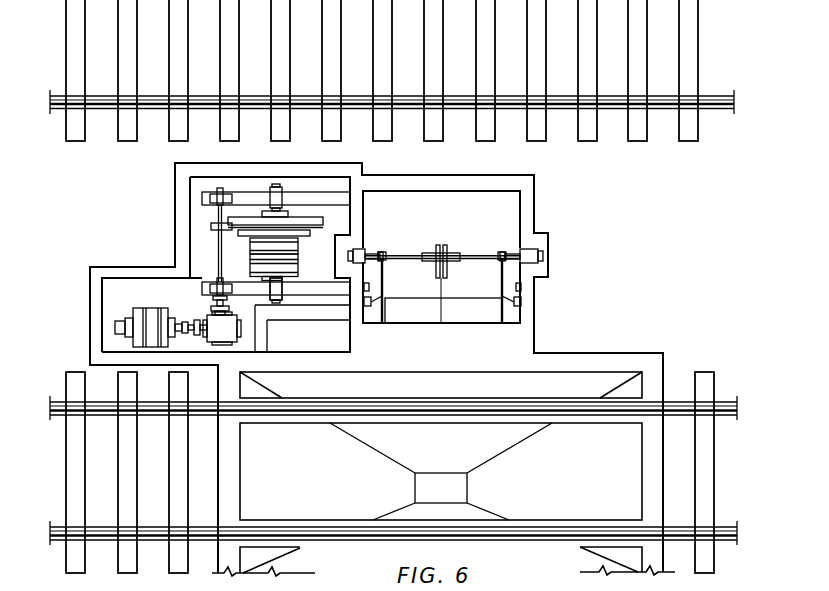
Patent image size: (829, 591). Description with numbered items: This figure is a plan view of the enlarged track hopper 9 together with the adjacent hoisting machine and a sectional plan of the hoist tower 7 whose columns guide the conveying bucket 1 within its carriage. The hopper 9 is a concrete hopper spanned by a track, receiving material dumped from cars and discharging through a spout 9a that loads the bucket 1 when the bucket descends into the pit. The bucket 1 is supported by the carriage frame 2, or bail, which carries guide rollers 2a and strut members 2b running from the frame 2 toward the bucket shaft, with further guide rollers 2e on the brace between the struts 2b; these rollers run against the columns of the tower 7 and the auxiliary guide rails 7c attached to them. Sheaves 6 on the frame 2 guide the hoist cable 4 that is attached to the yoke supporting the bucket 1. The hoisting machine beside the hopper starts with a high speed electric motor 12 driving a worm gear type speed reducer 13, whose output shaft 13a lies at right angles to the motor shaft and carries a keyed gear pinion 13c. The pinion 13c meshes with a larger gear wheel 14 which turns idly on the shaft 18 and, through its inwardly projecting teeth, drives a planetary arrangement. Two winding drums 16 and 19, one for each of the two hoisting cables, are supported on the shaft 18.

The conveying bucket 1 is at (443, 310).
The carriage frame 2 is at (442, 237).
The guide rollers 2a is at (372, 249).
The strut members 2b is at (442, 287).
The guide rollers of brace 2e is at (468, 318).
The hoist cable 4 is at (459, 312).
The sheaves 6 is at (440, 269).
The hoist tower 7 is at (540, 251).
The auxiliary guide rails 7c is at (471, 298).
The track hopper 9 is at (441, 471).
The spout 9a is at (441, 488).
The motor 12 is at (148, 316).
The speed reducer 13 is at (230, 342).
The shaft 13a is at (174, 249).
The gear pinion 13c is at (180, 212).
The gear wheel 14 is at (287, 223).
The winding drum 16 is at (290, 249).
The shaft 18 is at (289, 310).
The winding drum 19 is at (291, 271).